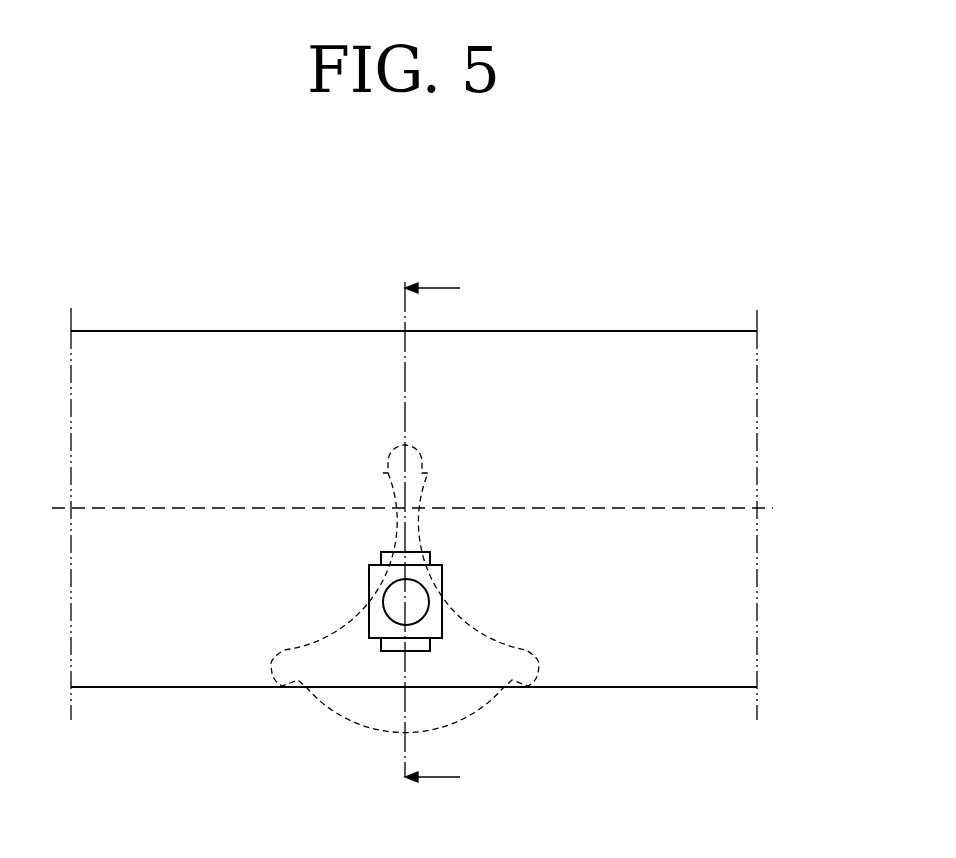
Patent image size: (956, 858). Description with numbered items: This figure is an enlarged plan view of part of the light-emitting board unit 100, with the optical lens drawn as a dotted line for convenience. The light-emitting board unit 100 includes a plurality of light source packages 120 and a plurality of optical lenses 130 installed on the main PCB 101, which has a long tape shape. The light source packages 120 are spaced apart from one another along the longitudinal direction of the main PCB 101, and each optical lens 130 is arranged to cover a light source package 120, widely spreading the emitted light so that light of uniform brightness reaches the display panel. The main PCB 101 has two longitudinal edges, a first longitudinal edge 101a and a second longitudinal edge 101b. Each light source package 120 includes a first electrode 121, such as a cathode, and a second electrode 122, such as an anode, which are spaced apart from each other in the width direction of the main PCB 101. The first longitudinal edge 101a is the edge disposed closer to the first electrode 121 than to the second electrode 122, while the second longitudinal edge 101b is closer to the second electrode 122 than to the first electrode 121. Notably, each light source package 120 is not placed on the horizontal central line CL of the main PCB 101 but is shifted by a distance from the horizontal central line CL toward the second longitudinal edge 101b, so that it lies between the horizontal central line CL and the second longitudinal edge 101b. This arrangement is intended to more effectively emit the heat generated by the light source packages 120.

The light-emitting board unit 100 is at (213, 252).
The main PCB 101 is at (446, 511).
The first longitudinal edge 101a is at (652, 330).
The second longitudinal edge 101b is at (652, 689).
The light source package 120 is at (441, 542).
The first electrode 121 is at (393, 552).
The second electrode 122 is at (390, 652).
The optical lens 130 is at (333, 710).
The horizontal central line CL is at (725, 508).